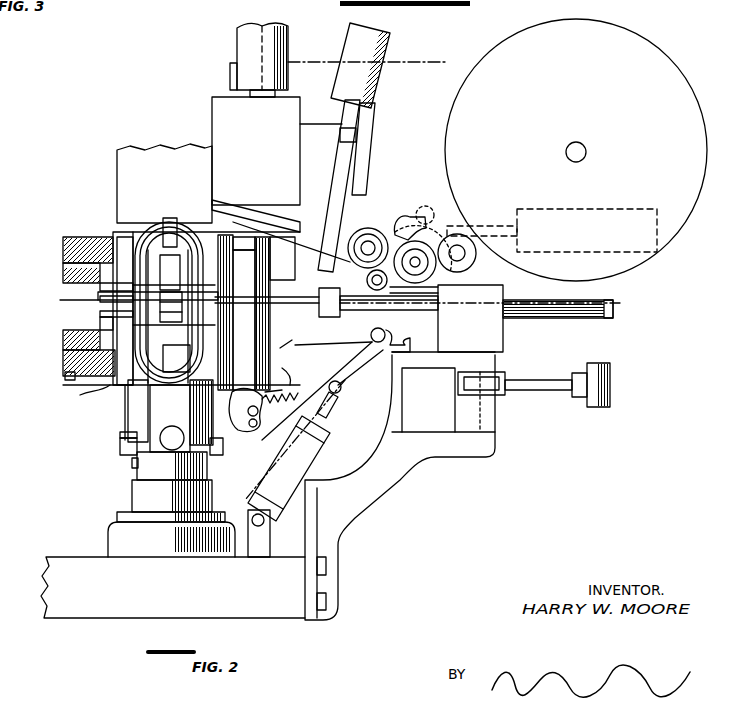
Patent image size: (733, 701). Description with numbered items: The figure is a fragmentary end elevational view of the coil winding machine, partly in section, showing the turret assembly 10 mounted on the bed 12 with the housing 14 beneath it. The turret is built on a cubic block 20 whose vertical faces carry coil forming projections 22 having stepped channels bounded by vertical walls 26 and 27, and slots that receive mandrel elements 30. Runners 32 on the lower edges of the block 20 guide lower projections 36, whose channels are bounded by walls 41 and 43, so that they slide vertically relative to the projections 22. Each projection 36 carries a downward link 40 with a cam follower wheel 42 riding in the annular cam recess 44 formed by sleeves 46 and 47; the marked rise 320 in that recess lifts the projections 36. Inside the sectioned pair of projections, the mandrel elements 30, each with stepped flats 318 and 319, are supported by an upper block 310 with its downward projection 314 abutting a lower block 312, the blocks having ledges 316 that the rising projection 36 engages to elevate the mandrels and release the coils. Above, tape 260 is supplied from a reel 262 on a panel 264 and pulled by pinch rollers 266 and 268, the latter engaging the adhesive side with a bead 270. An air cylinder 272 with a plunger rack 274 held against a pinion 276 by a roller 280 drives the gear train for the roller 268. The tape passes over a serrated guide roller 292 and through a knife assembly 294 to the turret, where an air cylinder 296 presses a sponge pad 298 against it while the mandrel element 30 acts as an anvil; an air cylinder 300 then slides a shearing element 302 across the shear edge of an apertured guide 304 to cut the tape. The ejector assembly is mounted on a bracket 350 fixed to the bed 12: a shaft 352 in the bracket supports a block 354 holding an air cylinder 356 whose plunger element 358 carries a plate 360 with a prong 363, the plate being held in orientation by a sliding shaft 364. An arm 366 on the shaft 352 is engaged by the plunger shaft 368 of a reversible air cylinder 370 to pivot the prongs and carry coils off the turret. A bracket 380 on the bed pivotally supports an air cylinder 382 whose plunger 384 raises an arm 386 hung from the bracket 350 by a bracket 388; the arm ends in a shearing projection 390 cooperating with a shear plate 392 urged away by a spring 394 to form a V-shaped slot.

The turret assembly 10 is at (60, 340).
The bed 12 is at (67, 603).
The housing 14 is at (115, 543).
The block 20 is at (145, 310).
The coil forming projections 22 is at (63, 263).
The vertical wall 26 is at (90, 237).
The vertical wall 27 is at (65, 240).
The mandrel element 30 is at (63, 244).
The runner 32 is at (128, 392).
The projection 36 is at (63, 350).
The link 40 is at (112, 426).
The wall 41 is at (181, 391).
The cam follower wheel 42 is at (120, 449).
The wall 43 is at (65, 378).
The annular cam recess 44 is at (158, 452).
The sleeve 46 is at (120, 436).
The sleeve 47 is at (133, 466).
The tape 260 is at (200, 208).
The reel 262 is at (593, 38).
The panel 264 is at (437, 74).
The pinch roller 266 is at (367, 278).
The pinch roller 268 is at (369, 241).
The bead 270 is at (362, 230).
The air cylinder 272 is at (586, 214).
The plunger rack 274 is at (486, 230).
The pinion 276 is at (448, 290).
The roller 280 is at (412, 216).
The serrated guide roller 292 is at (418, 250).
The knife assembly 294 is at (360, 160).
The air cylinder 296 is at (240, 50).
The sponge pad 298 is at (228, 205).
The air cylinder 300 is at (357, 46).
The shearing element 302 is at (340, 162).
The apertured guide 304 is at (350, 182).
The upper block 310 is at (100, 288).
The lower block 312 is at (100, 325).
The projection 314 is at (128, 306).
The ledge 316 is at (100, 299).
The flat 318 is at (105, 238).
The flat 319 is at (70, 238).
The rise 320 is at (172, 496).
The bracket 350 is at (410, 505).
The shaft 352 is at (482, 415).
The block 354 is at (500, 334).
The air cylinder 356 is at (565, 320).
The plunger element 358 is at (360, 306).
The plate 360 is at (320, 312).
The prong 363 is at (298, 290).
The shaft 364 is at (452, 302).
The arm 366 is at (458, 384).
The plunger shaft 368 is at (542, 390).
The air cylinder 370 is at (600, 375).
The bracket 380 is at (262, 553).
The air cylinder 382 is at (318, 455).
The plunger 384 is at (332, 416).
The arm 386 is at (358, 358).
The bracket 388 is at (386, 334).
The shearing projection 390 is at (238, 426).
The shear plate 392 is at (256, 480).
The spring 394 is at (340, 392).